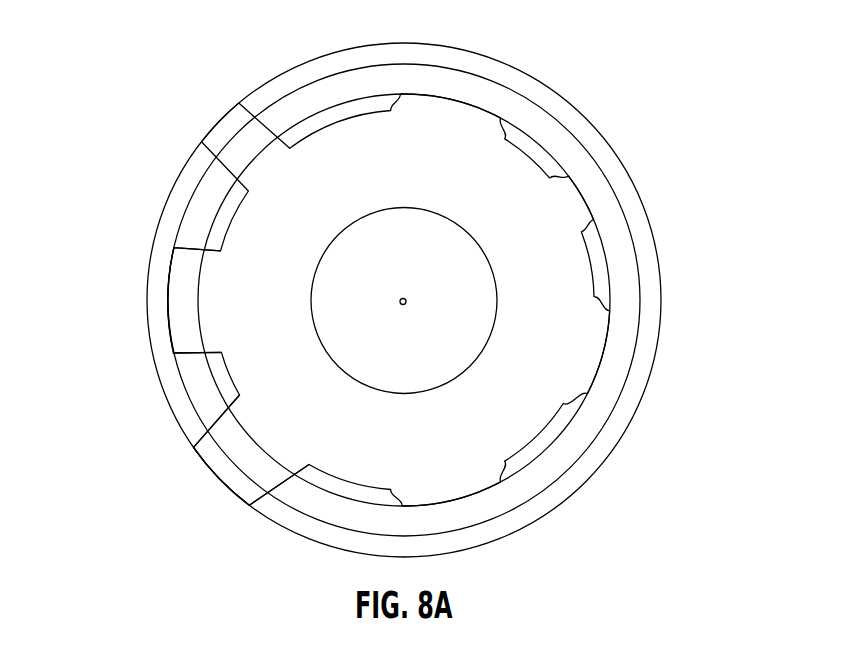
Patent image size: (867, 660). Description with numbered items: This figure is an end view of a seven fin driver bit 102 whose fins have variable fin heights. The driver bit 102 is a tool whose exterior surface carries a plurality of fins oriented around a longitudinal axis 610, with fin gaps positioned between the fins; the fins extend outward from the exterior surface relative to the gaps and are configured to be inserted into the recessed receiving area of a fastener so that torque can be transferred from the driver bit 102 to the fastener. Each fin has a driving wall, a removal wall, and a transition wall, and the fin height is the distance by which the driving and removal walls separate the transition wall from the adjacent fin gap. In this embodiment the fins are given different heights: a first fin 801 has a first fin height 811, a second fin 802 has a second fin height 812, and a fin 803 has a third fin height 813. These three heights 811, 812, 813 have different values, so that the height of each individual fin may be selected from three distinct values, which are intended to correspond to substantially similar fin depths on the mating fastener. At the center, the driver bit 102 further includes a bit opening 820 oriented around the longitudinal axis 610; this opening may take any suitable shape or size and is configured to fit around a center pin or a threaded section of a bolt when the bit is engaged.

The driver bit 102 is at (363, 140).
The longitudinal axis 610 is at (400, 298).
The first fin 801 is at (453, 112).
The second fin 802 is at (177, 294).
The fin 803 is at (227, 475).
The first fin height 811 is at (540, 148).
The second fin height 812 is at (530, 100).
The third fin height 813 is at (510, 65).
The bit opening 820 is at (358, 220).